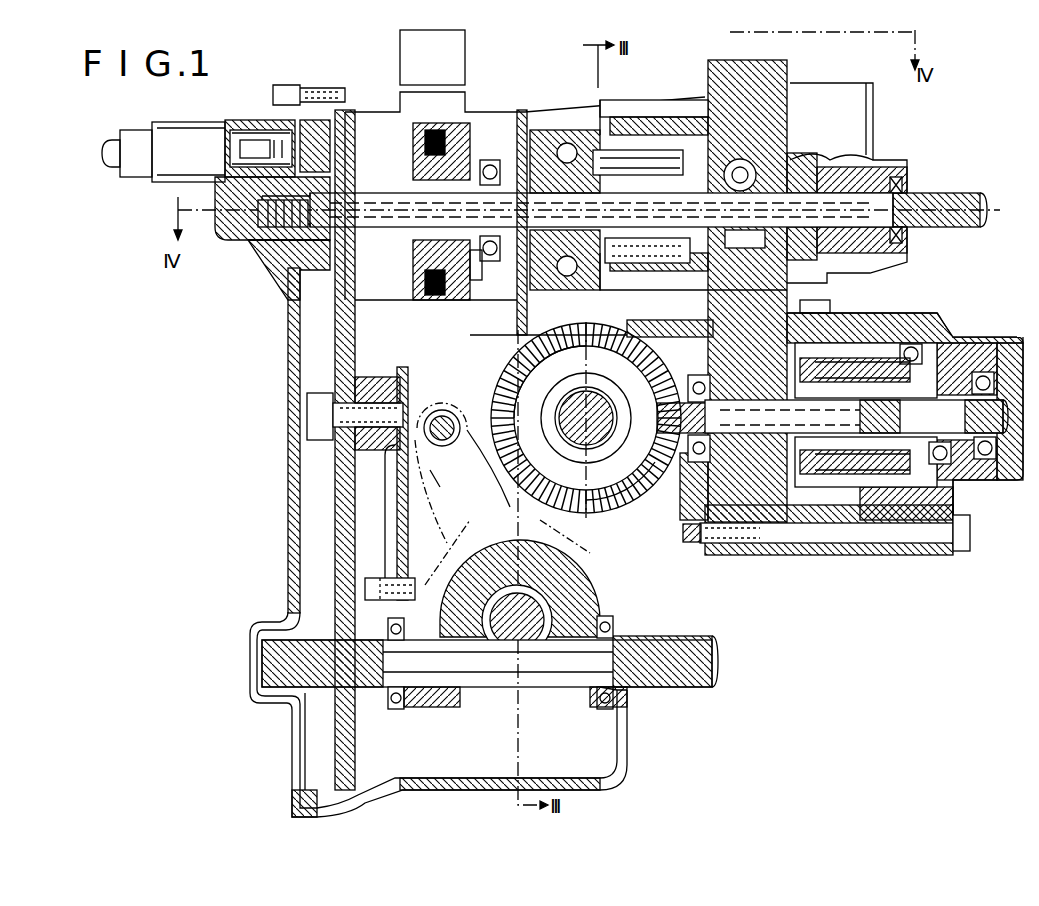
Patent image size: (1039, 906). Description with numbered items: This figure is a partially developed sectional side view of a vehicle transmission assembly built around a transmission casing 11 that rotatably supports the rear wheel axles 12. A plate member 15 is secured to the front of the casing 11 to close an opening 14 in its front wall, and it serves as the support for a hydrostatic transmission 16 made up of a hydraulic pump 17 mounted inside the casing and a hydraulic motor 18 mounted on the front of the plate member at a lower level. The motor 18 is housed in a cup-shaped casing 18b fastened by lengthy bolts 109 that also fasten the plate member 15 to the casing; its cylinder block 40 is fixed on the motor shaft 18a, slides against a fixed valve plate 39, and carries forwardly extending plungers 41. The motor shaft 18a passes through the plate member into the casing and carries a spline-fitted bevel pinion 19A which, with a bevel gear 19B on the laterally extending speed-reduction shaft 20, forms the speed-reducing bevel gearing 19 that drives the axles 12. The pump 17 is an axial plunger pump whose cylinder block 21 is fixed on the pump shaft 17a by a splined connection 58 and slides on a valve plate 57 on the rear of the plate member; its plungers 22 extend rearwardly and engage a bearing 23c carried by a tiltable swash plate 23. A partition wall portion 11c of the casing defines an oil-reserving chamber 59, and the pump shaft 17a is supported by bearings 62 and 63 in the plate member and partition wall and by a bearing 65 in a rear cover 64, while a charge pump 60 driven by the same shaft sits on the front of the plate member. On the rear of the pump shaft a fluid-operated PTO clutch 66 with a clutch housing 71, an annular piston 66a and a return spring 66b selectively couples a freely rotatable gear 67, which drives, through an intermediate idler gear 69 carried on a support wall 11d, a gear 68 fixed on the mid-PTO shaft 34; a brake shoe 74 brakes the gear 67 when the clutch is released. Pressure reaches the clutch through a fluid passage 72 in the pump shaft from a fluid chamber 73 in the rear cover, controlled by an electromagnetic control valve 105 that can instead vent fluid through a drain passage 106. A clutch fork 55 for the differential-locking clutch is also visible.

The transmission casing 11 is at (460, 787).
The partition wall portion 11c is at (455, 312).
The support wall 11d is at (420, 490).
The axle 12 is at (605, 605).
The opening 14 is at (752, 375).
The plate member 15 is at (780, 75).
The hydrostatic transmission 16 is at (735, 305).
The hydraulic pump 17 is at (655, 115).
The pump shaft 17a is at (740, 168).
The hydraulic motor 18 is at (890, 330).
The motor shaft 18a is at (790, 458).
The cup-shaped casing 18b is at (945, 322).
The speed-reducing bevel gearing 19 is at (700, 545).
The bevel pinion 19A is at (645, 460).
The bevel gear 19B is at (497, 393).
The speed-reduction shaft 20 is at (566, 405).
The cylinder block 21 is at (700, 320).
The plungers 22 is at (590, 197).
The tiltable swash plate 23 is at (540, 140).
The bearing 23c is at (567, 143).
The mid-PTO shaft 34 is at (575, 690).
The fixed valve plate 39 is at (812, 325).
The cylinder block 40 is at (845, 540).
The plungers 41 is at (856, 416).
The clutch fork 55 is at (443, 573).
The valve plate 57 is at (738, 160).
The splined connection 58 is at (640, 263).
The chamber 59 is at (690, 135).
The charge pump 60 is at (860, 150).
The bearing 62 is at (745, 250).
The bearing 63 is at (490, 160).
The rear cover 64 is at (288, 458).
The bearing 65 is at (290, 285).
The PTO clutch 66 is at (430, 300).
The annular piston 66a is at (450, 125).
The return spring 66b is at (420, 300).
The gear 67 is at (300, 125).
The gear 68 is at (290, 790).
The intermediate idler gear 69 is at (335, 500).
The clutch housing 71 is at (480, 288).
The fluid passage 72 is at (275, 262).
The fluid chamber 73 is at (260, 238).
The brake shoe 74 is at (372, 85).
The electromagnetic control valve 105 is at (198, 165).
The drain passage 106 is at (290, 200).
The lengthy bolts 109 is at (770, 555).